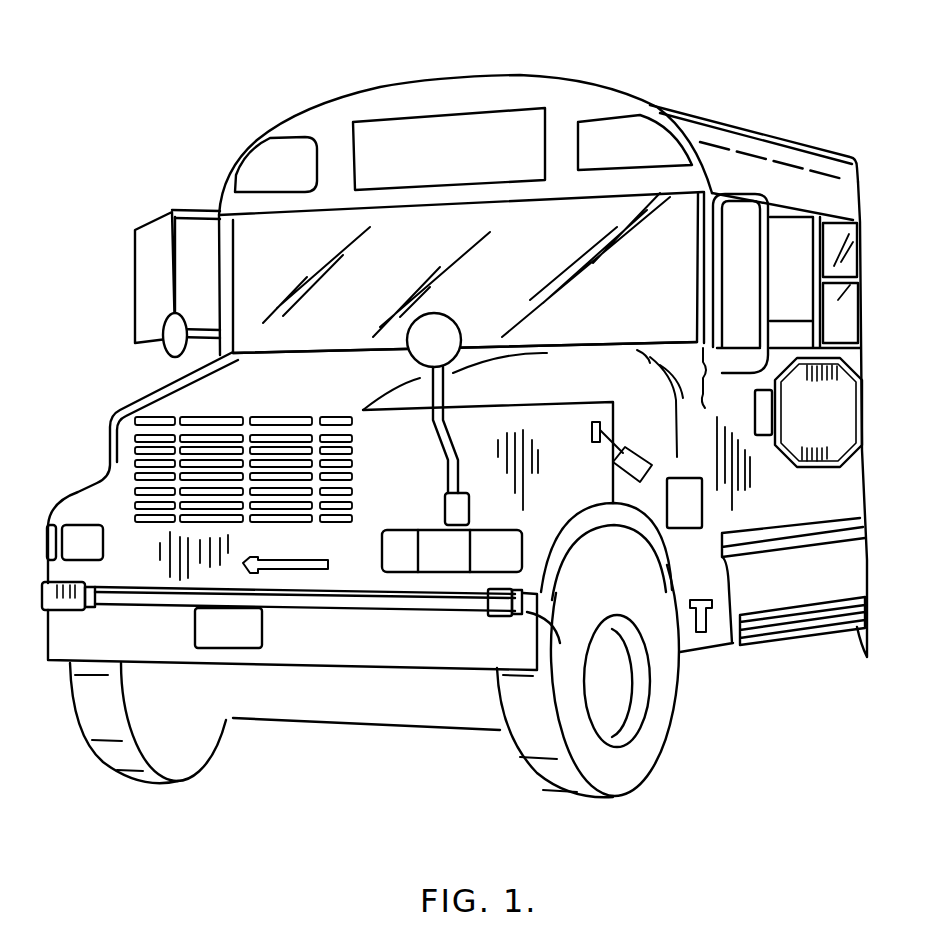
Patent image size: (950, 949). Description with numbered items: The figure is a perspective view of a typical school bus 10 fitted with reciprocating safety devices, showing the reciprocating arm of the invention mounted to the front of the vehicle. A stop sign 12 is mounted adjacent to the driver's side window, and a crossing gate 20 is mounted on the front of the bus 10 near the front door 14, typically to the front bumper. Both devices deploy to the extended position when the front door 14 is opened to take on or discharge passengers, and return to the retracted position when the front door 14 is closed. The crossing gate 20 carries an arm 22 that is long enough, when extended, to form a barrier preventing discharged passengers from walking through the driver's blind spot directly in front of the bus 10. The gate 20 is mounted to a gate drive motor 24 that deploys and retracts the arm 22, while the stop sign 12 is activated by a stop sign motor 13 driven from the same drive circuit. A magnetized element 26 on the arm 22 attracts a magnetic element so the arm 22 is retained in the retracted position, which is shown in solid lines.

The school bus 10 is at (697, 93).
The stop sign 12 is at (830, 452).
The stop sign motor 13 is at (763, 428).
The front door 14 is at (178, 372).
The crossing gate 20 is at (123, 563).
The arm 22 is at (343, 593).
The gate drive motor 24 is at (46, 606).
The magnetized element 26 is at (493, 616).